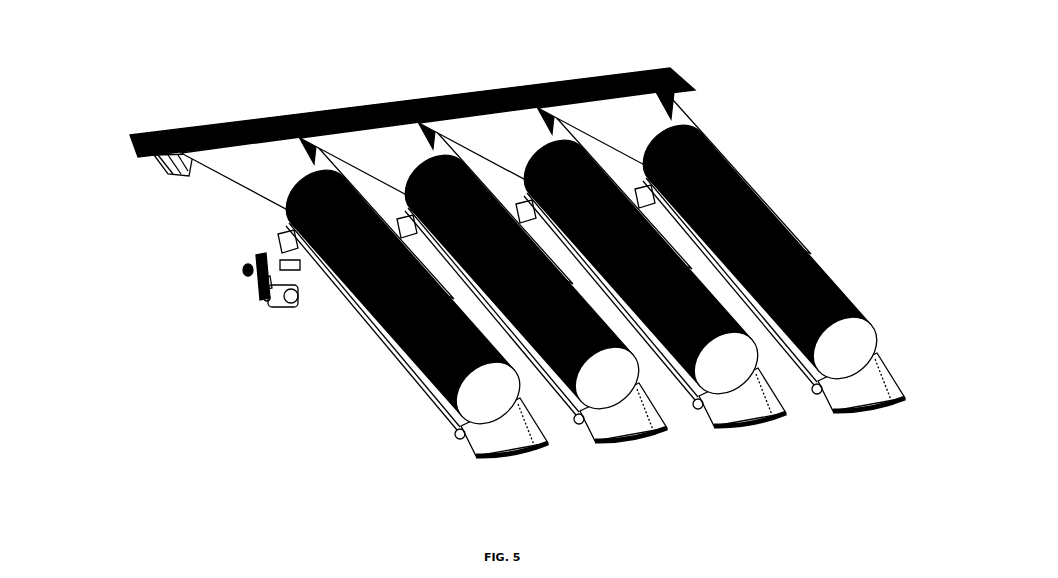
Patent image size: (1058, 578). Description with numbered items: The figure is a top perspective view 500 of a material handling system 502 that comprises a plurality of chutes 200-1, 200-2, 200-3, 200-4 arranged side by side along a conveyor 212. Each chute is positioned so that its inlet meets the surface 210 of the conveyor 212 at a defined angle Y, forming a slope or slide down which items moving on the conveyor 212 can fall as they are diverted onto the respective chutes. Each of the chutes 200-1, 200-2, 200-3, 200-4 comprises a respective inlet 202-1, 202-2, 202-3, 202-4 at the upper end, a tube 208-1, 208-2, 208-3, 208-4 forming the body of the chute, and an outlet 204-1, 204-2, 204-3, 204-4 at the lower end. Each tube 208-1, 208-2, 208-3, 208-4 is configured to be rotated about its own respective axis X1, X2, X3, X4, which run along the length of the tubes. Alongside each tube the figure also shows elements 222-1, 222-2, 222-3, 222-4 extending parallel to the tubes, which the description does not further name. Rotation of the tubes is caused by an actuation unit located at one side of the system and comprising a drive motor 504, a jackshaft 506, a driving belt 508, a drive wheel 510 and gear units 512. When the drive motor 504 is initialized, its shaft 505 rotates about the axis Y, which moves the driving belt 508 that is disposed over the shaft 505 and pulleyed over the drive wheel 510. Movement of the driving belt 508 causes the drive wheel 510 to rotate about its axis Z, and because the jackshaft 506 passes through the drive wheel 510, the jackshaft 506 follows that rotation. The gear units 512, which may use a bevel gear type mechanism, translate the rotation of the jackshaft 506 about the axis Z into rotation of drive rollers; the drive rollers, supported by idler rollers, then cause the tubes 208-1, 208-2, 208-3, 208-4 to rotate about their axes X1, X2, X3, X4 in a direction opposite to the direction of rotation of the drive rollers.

The top perspective view 500 is at (97, 52).
The material handling system 502 is at (128, 182).
The surface 210 is at (455, 84).
The conveyor 212 is at (153, 108).
The chute 200-1 is at (178, 94).
The chute 200-2 is at (282, 80).
The chute 200-3 is at (393, 68).
The chute 200-4 is at (522, 56).
The inlet 202-1 is at (296, 172).
The inlet 202-2 is at (412, 158).
The inlet 202-3 is at (537, 144).
The inlet 202-4 is at (596, 96).
The outlet 204-1 is at (497, 427).
The outlet 204-2 is at (623, 410).
The outlet 204-3 is at (748, 390).
The outlet 204-4 is at (867, 377).
The tube 208-1 is at (407, 370).
The tube 208-2 is at (522, 282).
The tube 208-3 is at (708, 142).
The tube 208-4 is at (812, 258).
The first guide rail 222-1 is at (367, 332).
The second guide rail 222-2 is at (563, 407).
The third guide rail 222-3 is at (685, 398).
The fourth guide rail 222-4 is at (793, 363).
The drive motor 504 is at (258, 291).
The shaft 505 is at (258, 290).
The jackshaft 506 is at (253, 250).
The driving belt 508 is at (250, 278).
The drive wheel 510 is at (253, 248).
The gear unit 512 is at (290, 257).
The axis X1 is at (200, 62).
The axis X2 is at (327, 50).
The axis X3 is at (452, 42).
The axis X4 is at (572, 30).
The axis Y is at (316, 276).
The axis Z is at (240, 263).